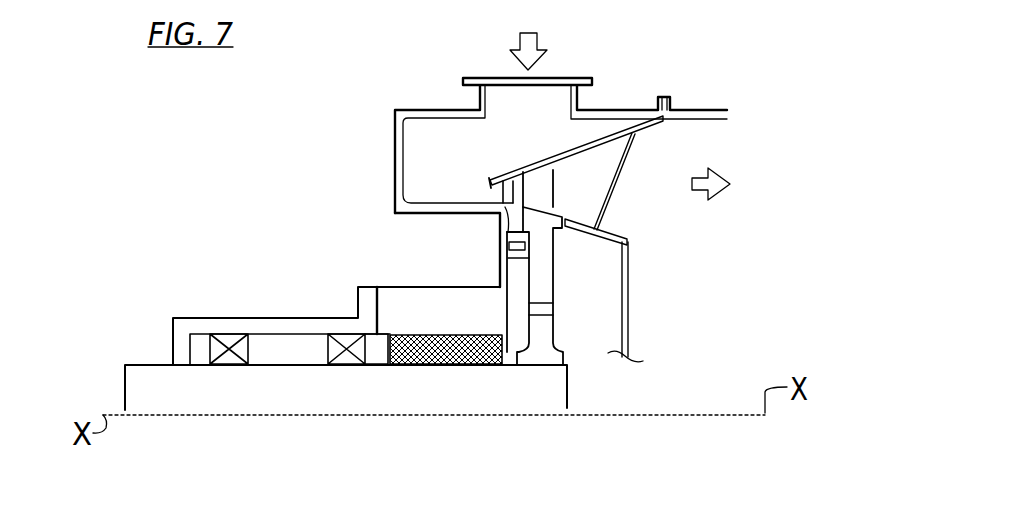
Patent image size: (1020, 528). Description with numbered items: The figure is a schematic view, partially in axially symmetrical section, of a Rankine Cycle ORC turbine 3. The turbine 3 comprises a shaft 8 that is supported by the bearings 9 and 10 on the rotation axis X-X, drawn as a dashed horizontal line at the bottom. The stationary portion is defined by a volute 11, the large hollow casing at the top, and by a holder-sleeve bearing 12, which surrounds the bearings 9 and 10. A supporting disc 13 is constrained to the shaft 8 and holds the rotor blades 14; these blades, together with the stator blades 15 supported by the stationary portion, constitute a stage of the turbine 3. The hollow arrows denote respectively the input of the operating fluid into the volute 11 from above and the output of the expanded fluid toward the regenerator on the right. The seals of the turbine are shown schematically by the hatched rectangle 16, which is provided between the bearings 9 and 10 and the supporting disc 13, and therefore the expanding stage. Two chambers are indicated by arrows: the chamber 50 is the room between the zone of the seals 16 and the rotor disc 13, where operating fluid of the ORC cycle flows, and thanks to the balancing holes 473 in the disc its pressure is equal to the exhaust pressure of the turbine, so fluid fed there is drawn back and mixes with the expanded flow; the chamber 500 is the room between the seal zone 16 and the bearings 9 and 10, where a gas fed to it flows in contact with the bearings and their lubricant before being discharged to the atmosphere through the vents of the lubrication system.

The turbine 3 is at (316, 248).
The shaft 8 is at (142, 380).
The bearing 9 is at (228, 338).
The bearing 10 is at (345, 337).
The volute 11 is at (393, 150).
The holder-sleeve bearing 12 is at (267, 323).
The supporting disc 13 is at (547, 340).
The rotor blades 14 is at (545, 197).
The stator blades 15 is at (503, 196).
The seals 16 is at (432, 358).
The chamber 50 is at (508, 350).
The balancing holes 473 is at (547, 311).
The chamber 500 is at (377, 350).